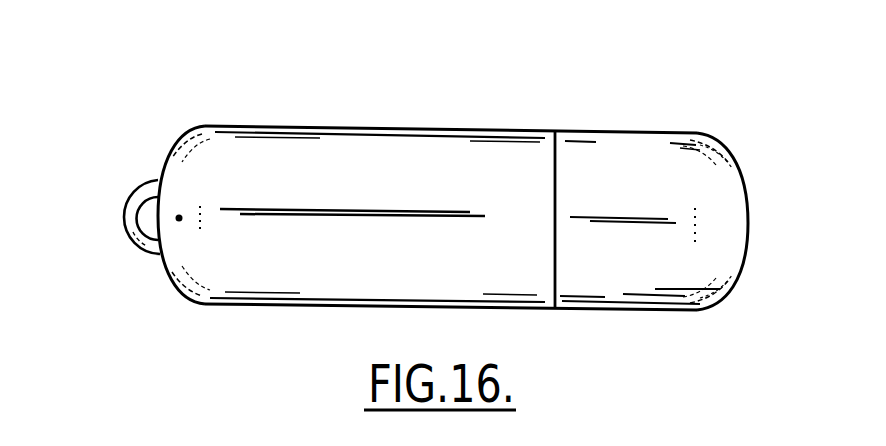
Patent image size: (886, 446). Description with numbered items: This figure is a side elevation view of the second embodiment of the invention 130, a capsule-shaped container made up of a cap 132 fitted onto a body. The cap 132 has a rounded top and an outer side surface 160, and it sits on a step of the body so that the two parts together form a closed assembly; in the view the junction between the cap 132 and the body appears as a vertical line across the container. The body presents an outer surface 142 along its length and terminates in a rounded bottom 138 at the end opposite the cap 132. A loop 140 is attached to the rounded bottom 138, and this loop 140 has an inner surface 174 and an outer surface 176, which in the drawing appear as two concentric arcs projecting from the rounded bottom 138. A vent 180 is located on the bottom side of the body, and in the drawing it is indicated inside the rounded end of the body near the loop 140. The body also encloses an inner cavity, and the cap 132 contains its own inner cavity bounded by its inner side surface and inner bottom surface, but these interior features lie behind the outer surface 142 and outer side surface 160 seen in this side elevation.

The invention 130 is at (466, 96).
The cap 132 is at (748, 167).
The rounded bottom 138 is at (160, 285).
The loop 140 is at (125, 248).
The outer surface 142 is at (478, 312).
The outer side surface 160 is at (658, 311).
The inner surface 174 is at (137, 217).
The outer surface 176 is at (140, 188).
The vent 180 is at (178, 216).